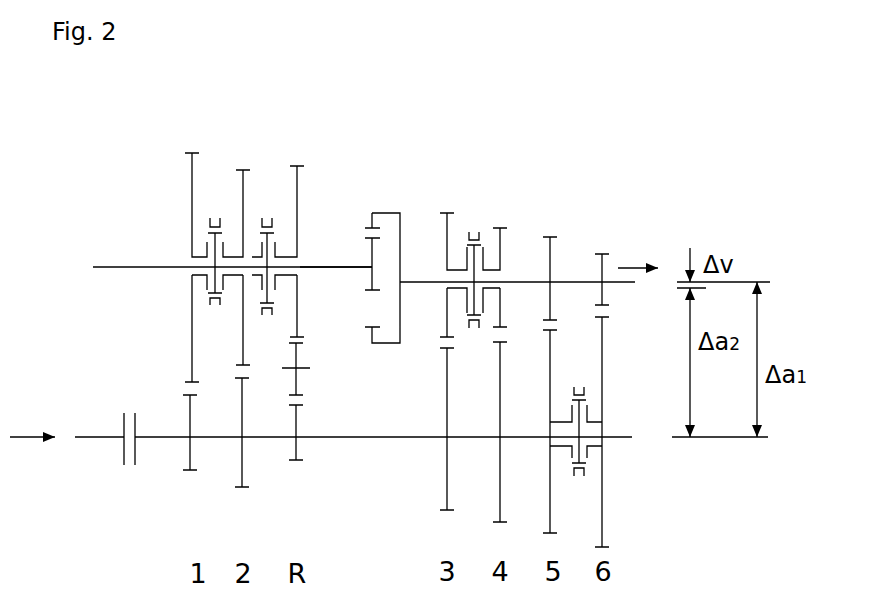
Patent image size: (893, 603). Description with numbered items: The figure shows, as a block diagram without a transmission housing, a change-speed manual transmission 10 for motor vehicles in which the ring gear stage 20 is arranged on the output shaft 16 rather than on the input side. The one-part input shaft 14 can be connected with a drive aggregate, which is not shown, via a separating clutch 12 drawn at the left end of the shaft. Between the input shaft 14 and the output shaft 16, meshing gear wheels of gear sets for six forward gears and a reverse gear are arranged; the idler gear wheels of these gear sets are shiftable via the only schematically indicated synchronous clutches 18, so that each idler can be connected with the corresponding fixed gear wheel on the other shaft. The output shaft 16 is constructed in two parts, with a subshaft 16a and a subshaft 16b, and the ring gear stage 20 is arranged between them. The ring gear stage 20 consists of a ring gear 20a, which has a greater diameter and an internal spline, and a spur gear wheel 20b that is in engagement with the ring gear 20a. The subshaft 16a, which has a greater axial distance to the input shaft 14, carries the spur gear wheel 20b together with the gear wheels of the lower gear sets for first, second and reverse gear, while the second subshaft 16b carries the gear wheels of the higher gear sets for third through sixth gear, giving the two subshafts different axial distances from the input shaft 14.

The manual transmission 10 is at (677, 190).
The separating clutch 12 is at (121, 457).
The input shaft 14 is at (398, 440).
The output shaft 16 is at (152, 266).
The subshaft 16a is at (335, 265).
The subshaft 16b is at (570, 282).
The synchronous clutch 18 is at (215, 219).
The ring gear stage 20 is at (391, 205).
The ring gear 20a is at (400, 213).
The spur gear wheel 20b is at (368, 277).